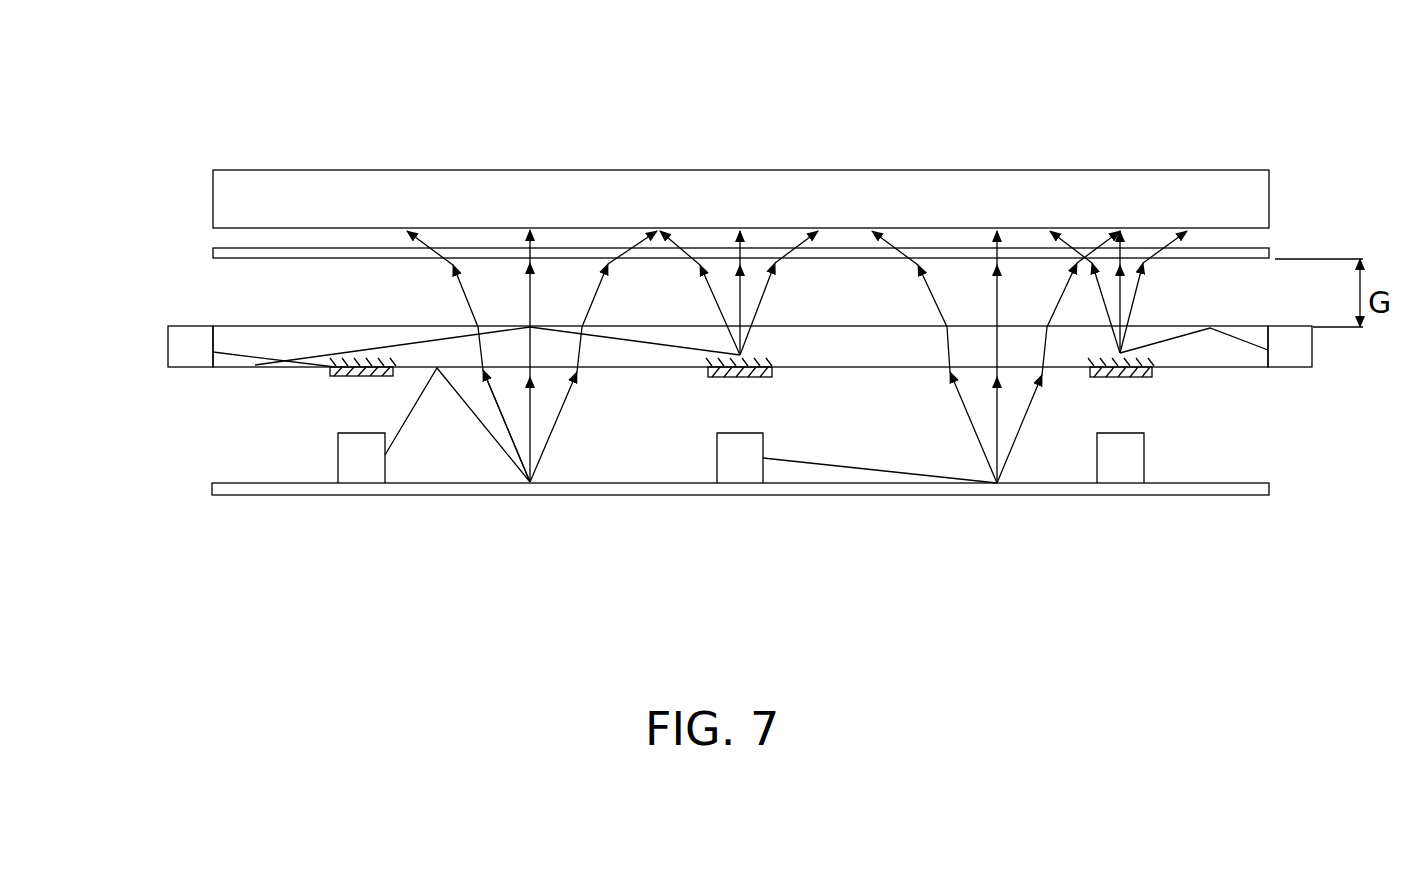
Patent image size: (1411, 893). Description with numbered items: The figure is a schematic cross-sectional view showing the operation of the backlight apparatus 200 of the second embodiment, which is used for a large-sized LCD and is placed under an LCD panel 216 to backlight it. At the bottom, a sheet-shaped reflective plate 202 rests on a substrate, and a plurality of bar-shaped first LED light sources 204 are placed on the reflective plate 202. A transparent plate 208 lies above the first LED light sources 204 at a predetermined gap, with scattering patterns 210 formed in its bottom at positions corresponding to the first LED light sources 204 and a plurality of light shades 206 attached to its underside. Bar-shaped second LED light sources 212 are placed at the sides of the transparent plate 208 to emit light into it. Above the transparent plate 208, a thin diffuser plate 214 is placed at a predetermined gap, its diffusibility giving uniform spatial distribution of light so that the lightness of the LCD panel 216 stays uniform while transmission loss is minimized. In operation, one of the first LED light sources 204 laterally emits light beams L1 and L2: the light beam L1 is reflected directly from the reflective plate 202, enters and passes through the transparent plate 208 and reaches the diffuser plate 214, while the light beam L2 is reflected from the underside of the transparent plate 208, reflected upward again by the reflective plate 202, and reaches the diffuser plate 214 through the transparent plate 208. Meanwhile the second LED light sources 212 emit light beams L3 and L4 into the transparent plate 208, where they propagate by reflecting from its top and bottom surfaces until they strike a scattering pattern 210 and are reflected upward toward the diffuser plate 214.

The backlight apparatus 200 is at (960, 68).
The reflective plate 202 is at (250, 488).
The first LED light sources 204 is at (365, 470).
The light shades 206 is at (730, 375).
The transparent plate 208 is at (247, 333).
The scattering patterns 210 is at (317, 370).
The second LED light sources 212 is at (175, 350).
The diffuser plate 214 is at (213, 250).
The LCD panel 216 is at (213, 193).
The light beam L1 is at (850, 470).
The light beam L2 is at (493, 443).
The light beam L3 is at (348, 350).
The light beam L4 is at (1183, 338).